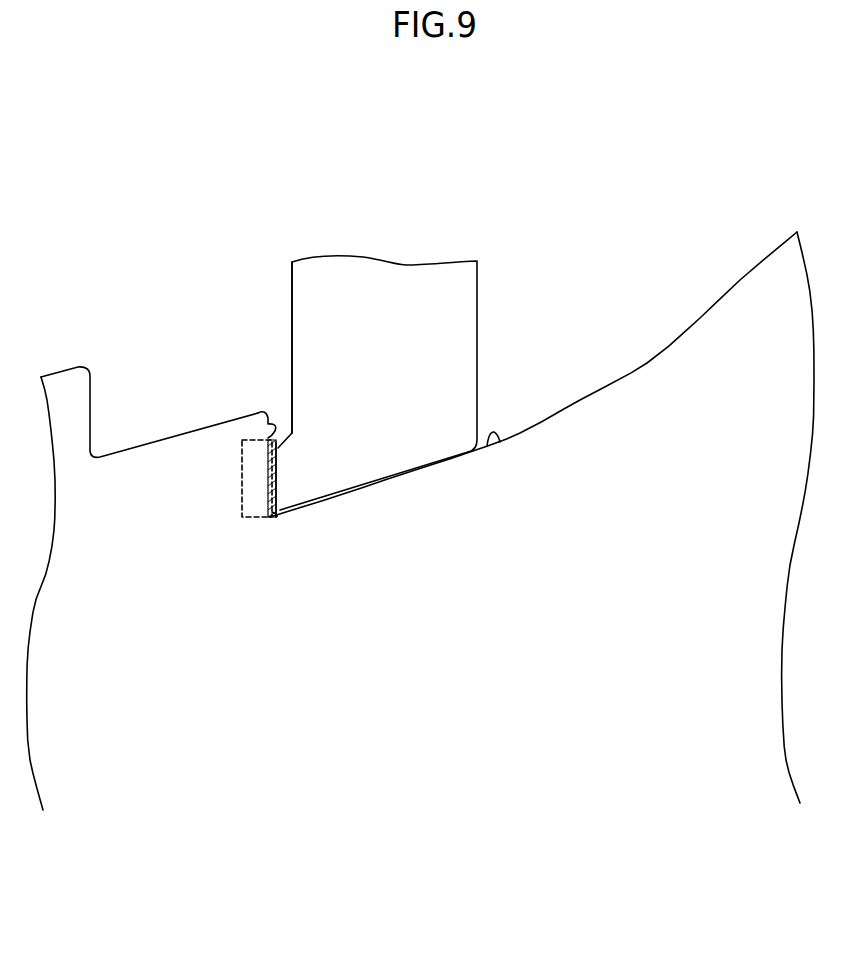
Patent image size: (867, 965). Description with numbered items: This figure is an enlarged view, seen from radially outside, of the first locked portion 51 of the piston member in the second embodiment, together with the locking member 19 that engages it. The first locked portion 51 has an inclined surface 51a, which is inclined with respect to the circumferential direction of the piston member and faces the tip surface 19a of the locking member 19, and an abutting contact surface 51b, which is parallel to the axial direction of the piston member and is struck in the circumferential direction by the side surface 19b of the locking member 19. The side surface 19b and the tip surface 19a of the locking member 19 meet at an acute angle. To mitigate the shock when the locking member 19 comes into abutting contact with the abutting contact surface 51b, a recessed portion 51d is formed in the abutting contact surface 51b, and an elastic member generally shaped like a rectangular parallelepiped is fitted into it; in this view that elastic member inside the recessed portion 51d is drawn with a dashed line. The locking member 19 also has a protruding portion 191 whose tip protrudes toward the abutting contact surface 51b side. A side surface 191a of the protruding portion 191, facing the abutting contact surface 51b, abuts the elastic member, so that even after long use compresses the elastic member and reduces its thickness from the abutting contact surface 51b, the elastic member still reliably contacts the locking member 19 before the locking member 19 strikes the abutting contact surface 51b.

The first locked portion 51 is at (540, 260).
The inclined surface 51a is at (500, 442).
The abutting contact surface 51b is at (266, 423).
The recessed portion 51d is at (248, 518).
The locking member 19 is at (391, 411).
The tip surface 19a is at (400, 478).
The side surface 19b is at (292, 327).
The protruding portion 191 is at (292, 487).
The side surface of the protruding portion 191a is at (275, 470).